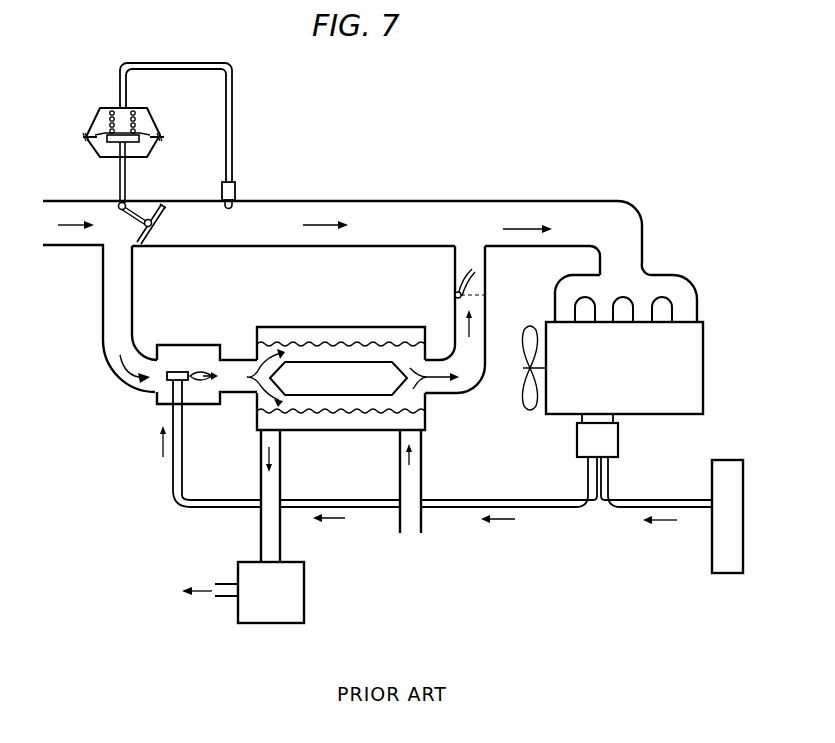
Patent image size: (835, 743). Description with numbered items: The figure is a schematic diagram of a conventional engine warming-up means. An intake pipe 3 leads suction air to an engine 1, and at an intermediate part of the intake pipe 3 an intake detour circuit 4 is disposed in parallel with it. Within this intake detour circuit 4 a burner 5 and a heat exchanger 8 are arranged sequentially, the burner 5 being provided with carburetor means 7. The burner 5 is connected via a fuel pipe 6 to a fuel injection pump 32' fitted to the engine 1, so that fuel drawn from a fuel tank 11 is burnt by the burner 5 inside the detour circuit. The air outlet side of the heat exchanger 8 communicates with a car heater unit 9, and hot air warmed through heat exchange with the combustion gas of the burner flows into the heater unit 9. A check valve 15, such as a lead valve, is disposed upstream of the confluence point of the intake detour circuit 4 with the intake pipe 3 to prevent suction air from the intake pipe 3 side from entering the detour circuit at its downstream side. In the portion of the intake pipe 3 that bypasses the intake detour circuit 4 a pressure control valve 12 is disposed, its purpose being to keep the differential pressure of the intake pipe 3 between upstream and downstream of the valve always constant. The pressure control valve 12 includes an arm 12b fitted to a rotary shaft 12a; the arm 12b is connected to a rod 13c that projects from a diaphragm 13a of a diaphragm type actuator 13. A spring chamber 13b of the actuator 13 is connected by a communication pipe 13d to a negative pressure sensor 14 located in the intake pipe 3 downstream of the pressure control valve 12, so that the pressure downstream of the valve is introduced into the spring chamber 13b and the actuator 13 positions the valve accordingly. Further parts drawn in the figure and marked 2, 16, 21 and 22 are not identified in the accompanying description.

The engine 1 is at (697, 357).
The intake manifold 2 is at (663, 283).
The intake pipe 3 is at (373, 200).
The intake detour circuit 4 is at (112, 308).
The burner 5 is at (163, 396).
The fuel pipe 6 is at (373, 508).
The carburetor means 7 is at (174, 372).
The heat exchanger 8 is at (349, 335).
The car heater unit 9 is at (298, 592).
The fuel tank 11 is at (718, 540).
The pressure control valve 12 is at (164, 205).
The rotary shaft 12a is at (151, 229).
The arm 12b is at (130, 218).
The diaphragm type actuator 13 is at (164, 133).
The diaphragm 13a is at (150, 133).
The spring chamber 13b is at (100, 123).
The rod 13c is at (120, 178).
The communication pipe 13d is at (232, 105).
The negative pressure sensor 14 is at (236, 190).
The check valve 15 is at (478, 277).
The return passage 16 is at (472, 368).
The heating medium inlet pipe 21 is at (421, 452).
The heating medium outlet pipe 22 is at (261, 463).
The fuel injection pump 32' is at (625, 460).